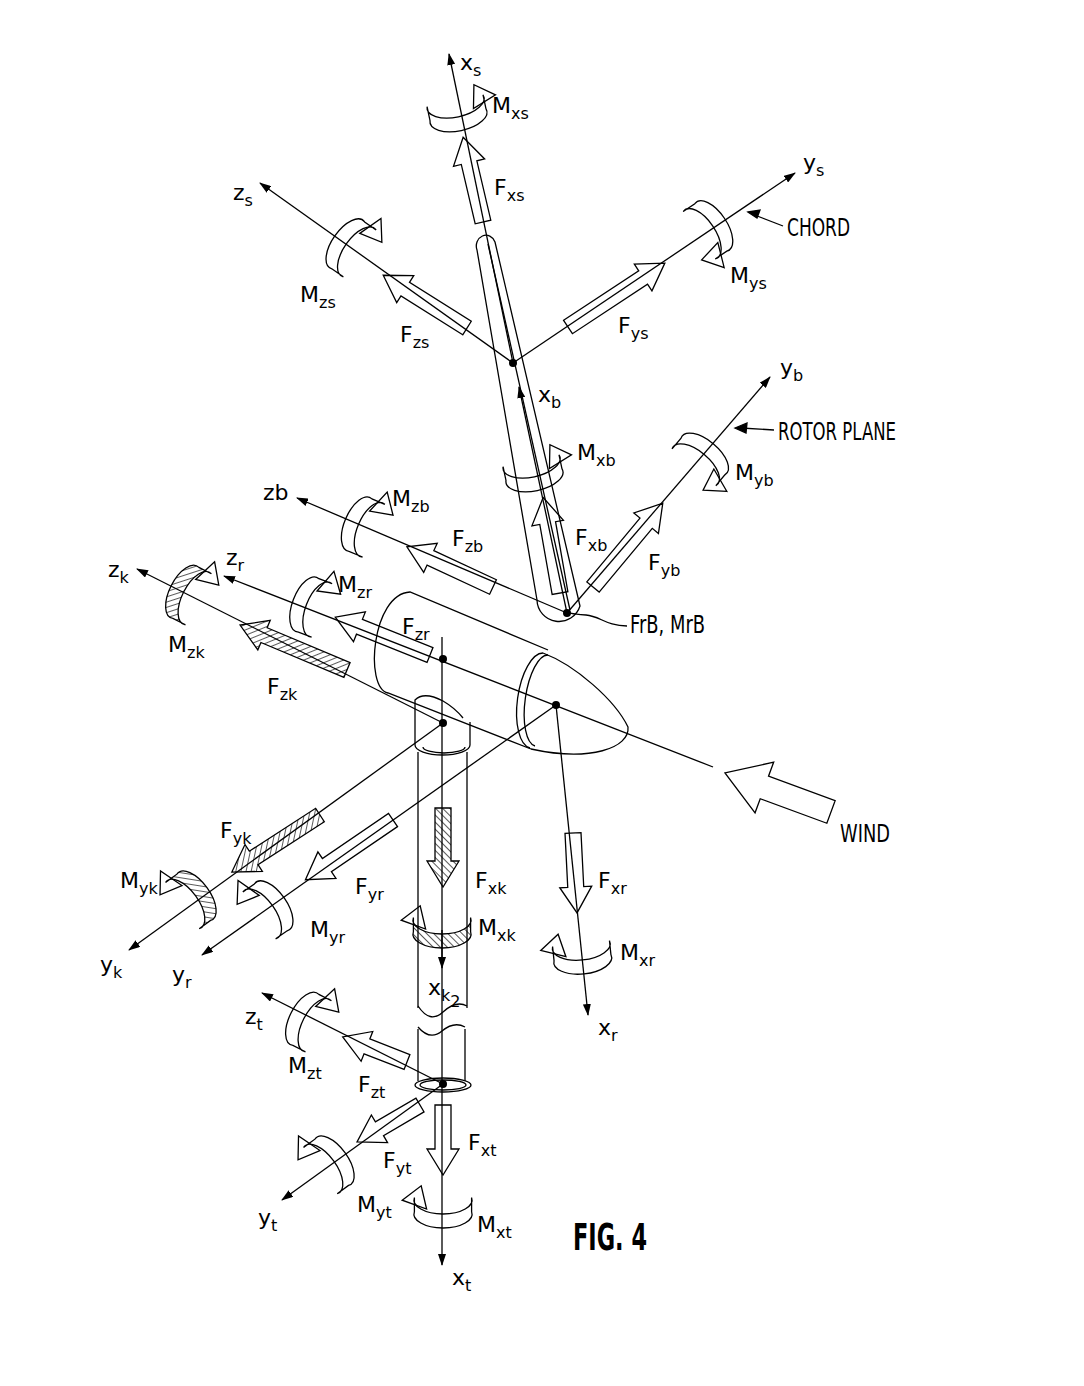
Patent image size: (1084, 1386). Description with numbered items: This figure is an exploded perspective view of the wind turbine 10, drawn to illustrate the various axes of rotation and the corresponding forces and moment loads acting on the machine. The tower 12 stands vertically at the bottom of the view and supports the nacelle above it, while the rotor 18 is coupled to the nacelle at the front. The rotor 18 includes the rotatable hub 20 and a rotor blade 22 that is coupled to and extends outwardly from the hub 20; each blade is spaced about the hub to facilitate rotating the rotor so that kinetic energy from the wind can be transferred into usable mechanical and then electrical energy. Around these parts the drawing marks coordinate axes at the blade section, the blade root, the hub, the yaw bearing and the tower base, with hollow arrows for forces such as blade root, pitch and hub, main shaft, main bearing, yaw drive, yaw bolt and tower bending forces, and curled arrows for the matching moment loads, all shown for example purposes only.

The wind turbine 10 is at (762, 88).
The tower 12 is at (466, 1062).
The rotor 18 is at (672, 687).
The hub 20 is at (604, 702).
The rotor blade 22 is at (507, 428).